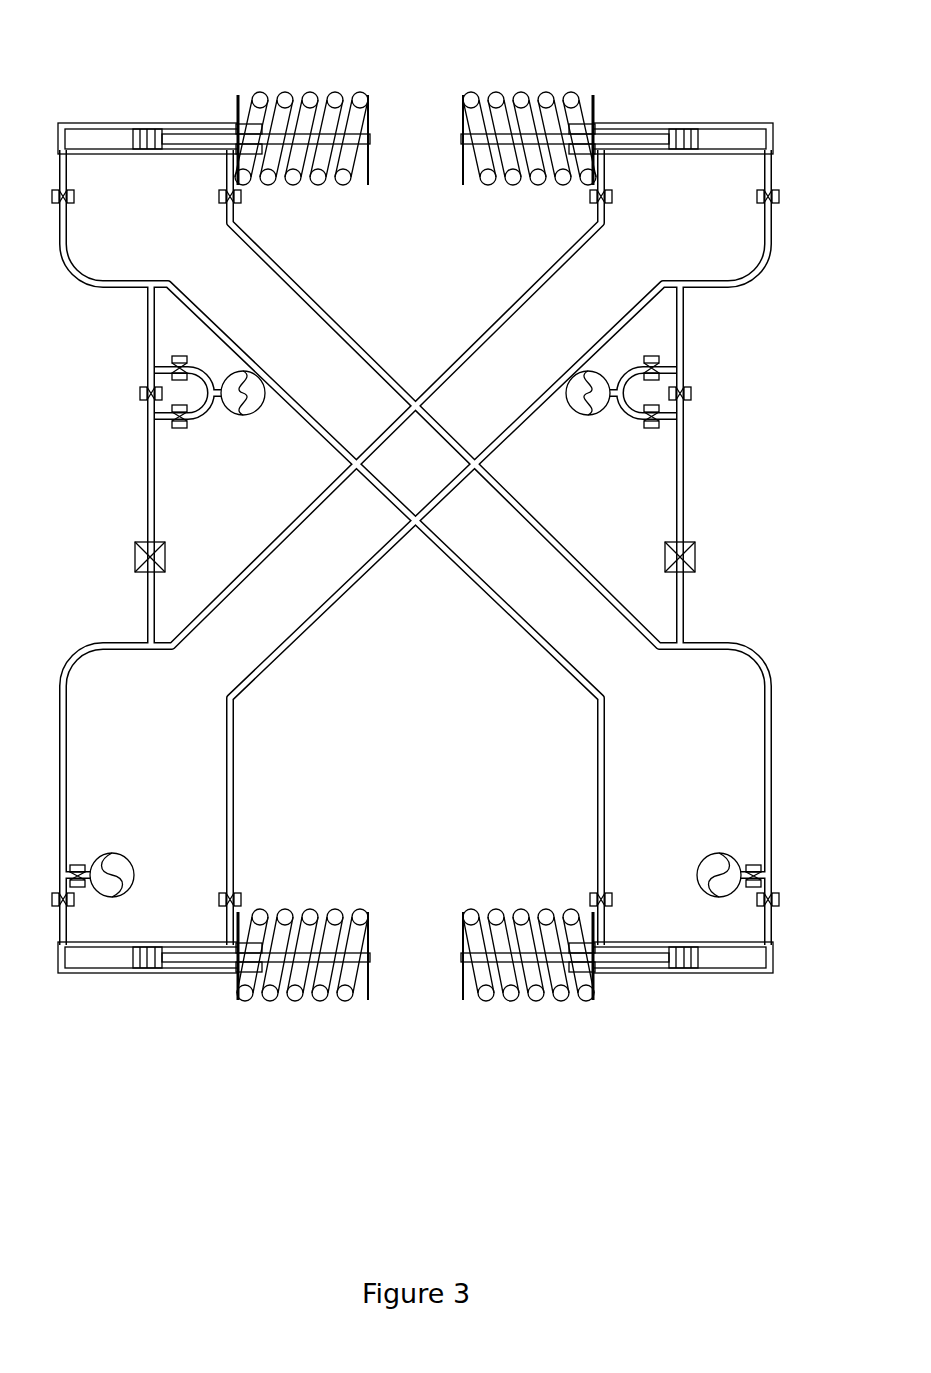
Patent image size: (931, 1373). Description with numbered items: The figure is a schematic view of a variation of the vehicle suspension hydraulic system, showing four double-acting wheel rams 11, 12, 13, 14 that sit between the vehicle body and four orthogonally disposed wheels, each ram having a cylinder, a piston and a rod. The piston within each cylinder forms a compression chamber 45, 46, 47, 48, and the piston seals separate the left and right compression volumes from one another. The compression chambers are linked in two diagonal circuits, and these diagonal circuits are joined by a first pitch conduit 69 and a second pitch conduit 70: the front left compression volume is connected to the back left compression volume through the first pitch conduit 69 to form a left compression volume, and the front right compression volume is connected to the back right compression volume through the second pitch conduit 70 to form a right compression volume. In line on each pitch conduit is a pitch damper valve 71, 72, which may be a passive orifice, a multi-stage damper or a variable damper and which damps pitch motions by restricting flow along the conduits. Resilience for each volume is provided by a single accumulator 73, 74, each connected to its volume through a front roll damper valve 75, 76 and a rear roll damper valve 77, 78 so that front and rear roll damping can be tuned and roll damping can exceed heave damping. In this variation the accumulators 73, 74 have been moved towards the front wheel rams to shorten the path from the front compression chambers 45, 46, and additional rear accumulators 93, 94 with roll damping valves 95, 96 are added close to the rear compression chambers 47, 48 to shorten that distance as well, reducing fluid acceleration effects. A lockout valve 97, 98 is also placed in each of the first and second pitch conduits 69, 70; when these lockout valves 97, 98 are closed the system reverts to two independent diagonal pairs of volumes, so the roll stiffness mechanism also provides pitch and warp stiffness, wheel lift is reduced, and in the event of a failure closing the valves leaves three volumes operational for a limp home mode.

The wheel ram 11 is at (136, 75).
The wheel ram 12 is at (694, 75).
The wheel ram 13 is at (680, 1029).
The wheel ram 14 is at (141, 1029).
The compression chamber 45 is at (93, 145).
The compression chamber 46 is at (738, 145).
The compression chamber 47 is at (738, 953).
The compression chamber 48 is at (93, 953).
The first pitch conduit 69 is at (147, 335).
The second pitch conduit 70 is at (684, 335).
The pitch damper valve 71 is at (140, 398).
The pitch damper valve 72 is at (691, 398).
The accumulator 73 is at (256, 406).
The accumulator 74 is at (575, 406).
The front roll damper valve 75 is at (181, 356).
The front roll damper valve 76 is at (650, 356).
The rear roll damper valve 77 is at (648, 431).
The rear roll damper valve 78 is at (183, 431).
The rear accumulator 93 is at (708, 862).
The rear accumulator 94 is at (123, 862).
The roll damping valve 95 is at (752, 863).
The roll damping valve 96 is at (83, 863).
The lockout valve 97 is at (135, 546).
The lockout valve 98 is at (696, 546).